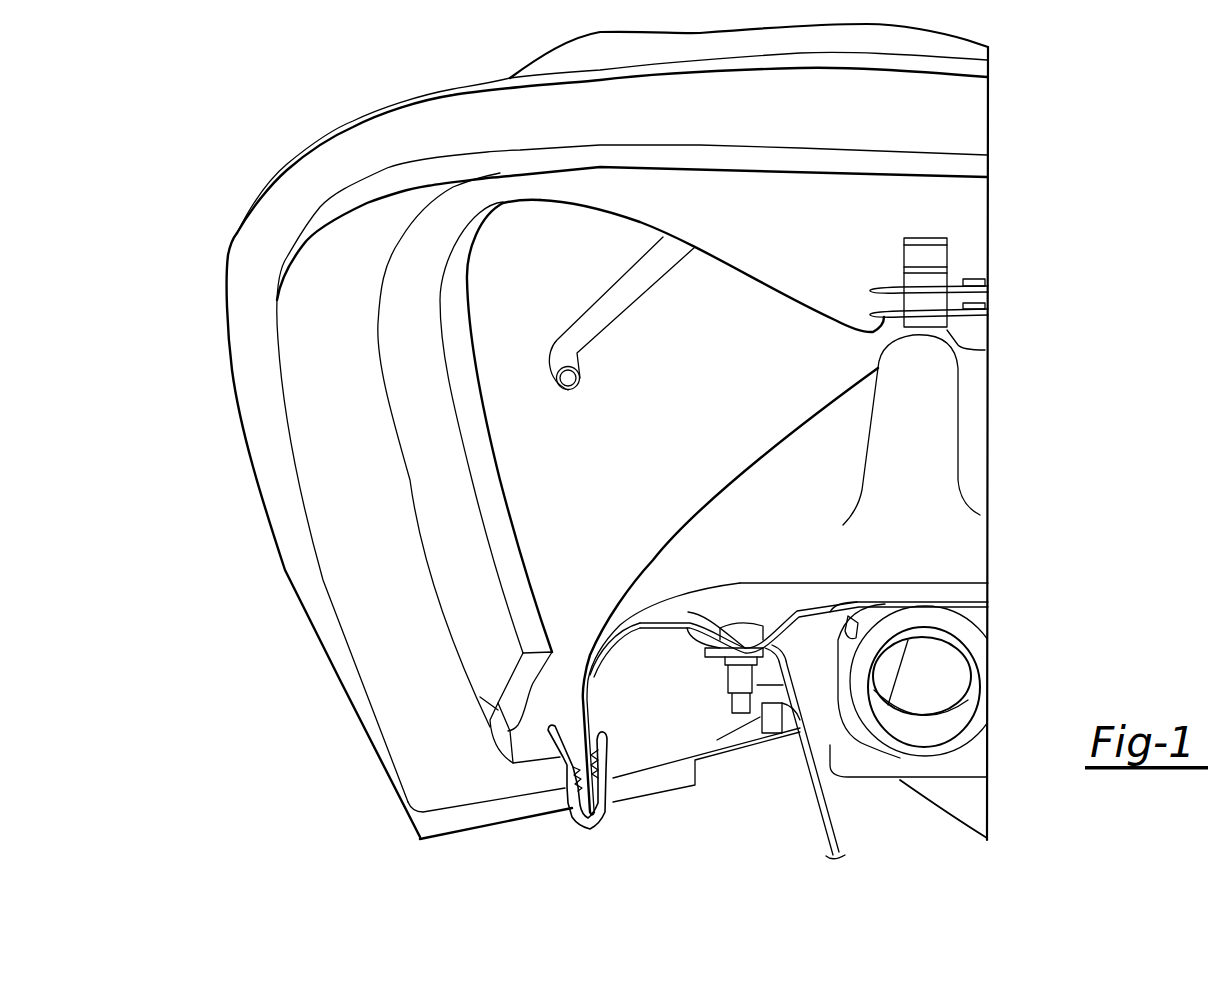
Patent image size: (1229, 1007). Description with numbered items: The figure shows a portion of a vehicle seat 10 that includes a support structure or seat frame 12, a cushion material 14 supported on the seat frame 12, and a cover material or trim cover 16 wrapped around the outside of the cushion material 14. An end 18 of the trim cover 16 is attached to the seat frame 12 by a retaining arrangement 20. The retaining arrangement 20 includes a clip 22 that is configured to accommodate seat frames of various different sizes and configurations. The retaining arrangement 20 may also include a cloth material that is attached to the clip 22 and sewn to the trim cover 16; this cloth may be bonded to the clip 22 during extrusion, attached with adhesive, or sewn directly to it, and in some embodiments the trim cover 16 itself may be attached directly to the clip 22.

The vehicle seat 10 is at (1062, 102).
The seat frame 12 is at (728, 746).
The cushion material 14 is at (402, 641).
The trim cover 16 is at (227, 342).
The end of the trim cover 18 is at (565, 800).
The retaining arrangement 20 is at (608, 838).
The clip 22 is at (598, 812).